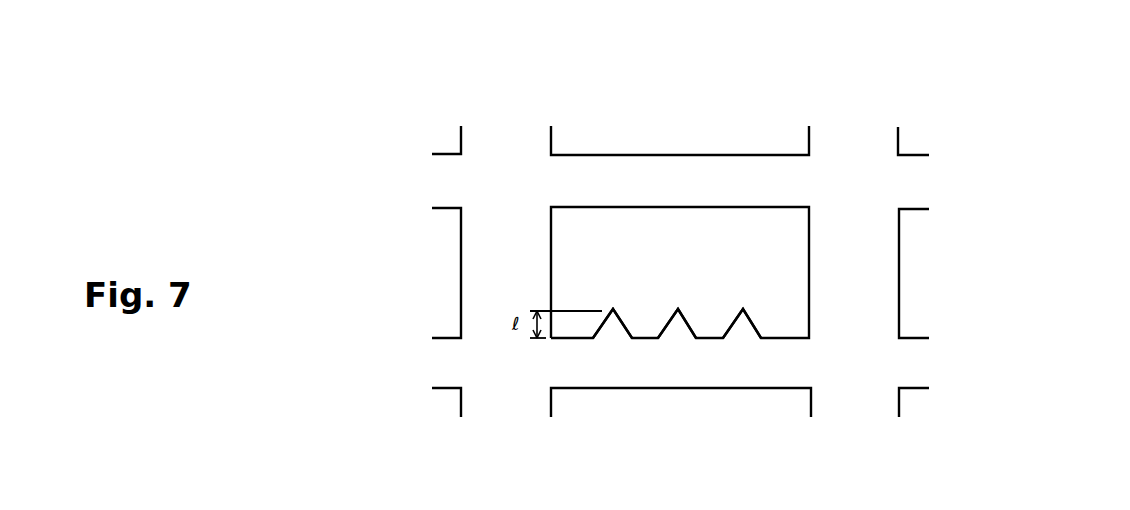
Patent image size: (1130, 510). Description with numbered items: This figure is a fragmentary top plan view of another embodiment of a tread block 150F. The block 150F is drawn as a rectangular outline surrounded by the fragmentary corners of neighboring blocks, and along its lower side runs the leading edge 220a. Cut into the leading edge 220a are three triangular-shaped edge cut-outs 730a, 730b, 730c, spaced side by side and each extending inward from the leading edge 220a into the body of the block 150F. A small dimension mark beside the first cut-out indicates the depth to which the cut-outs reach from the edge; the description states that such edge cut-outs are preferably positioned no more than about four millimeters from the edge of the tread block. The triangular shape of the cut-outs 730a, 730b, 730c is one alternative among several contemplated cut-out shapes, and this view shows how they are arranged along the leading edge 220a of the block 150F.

The block 150F is at (817, 203).
The leading edge 220a is at (573, 340).
The triangular-shaped edge cut-out 730a is at (613, 331).
The triangular-shaped edge cut-out 730b is at (681, 331).
The triangular-shaped edge cut-out 730c is at (745, 331).